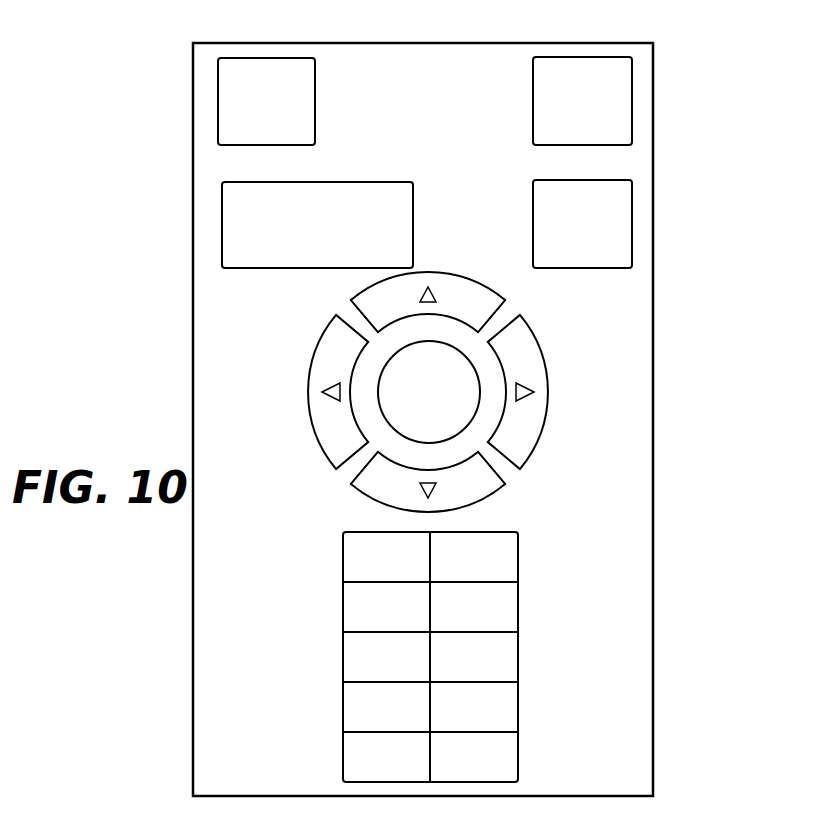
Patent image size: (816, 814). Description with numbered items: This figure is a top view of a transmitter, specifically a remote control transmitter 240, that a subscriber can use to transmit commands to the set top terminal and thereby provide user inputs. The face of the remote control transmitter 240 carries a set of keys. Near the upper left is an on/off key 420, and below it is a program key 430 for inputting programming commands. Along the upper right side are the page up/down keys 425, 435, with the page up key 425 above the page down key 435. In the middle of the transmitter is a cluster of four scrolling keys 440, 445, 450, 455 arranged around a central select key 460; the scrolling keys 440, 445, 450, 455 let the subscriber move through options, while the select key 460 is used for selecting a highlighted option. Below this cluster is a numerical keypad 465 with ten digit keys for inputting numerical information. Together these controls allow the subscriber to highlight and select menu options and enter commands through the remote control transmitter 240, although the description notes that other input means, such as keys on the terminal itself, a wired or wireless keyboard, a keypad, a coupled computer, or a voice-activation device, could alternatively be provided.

The remote control transmitter 240 is at (70, 428).
The on/off key 420 is at (228, 84).
The page up key 425 is at (623, 93).
The program key 430 is at (228, 196).
The page down key 435 is at (623, 217).
The scrolling key 440 is at (447, 278).
The scrolling key 445 is at (370, 490).
The scrolling key 450 is at (327, 353).
The scrolling key 455 is at (533, 348).
The select key 460 is at (463, 422).
The numerical keypad 465 is at (530, 572).